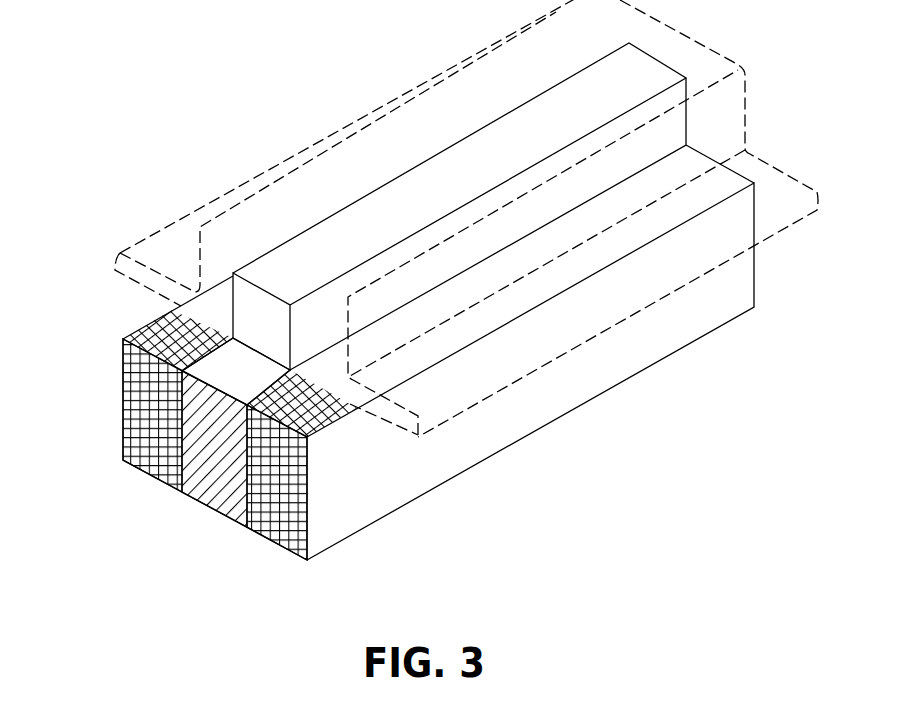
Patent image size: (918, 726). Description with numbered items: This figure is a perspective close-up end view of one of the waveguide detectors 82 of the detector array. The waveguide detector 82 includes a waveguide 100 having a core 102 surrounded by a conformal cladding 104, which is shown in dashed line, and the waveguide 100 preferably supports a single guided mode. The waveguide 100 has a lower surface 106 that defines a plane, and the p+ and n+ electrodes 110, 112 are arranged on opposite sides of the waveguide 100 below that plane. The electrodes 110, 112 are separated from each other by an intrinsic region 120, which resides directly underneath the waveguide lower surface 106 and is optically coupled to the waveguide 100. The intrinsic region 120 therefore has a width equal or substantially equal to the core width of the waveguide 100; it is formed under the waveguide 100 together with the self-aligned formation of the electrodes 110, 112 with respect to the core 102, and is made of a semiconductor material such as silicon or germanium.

The waveguide detector 82 is at (305, 64).
The waveguide 100 is at (125, 358).
The core 102 is at (233, 307).
The cladding 104 is at (772, 163).
The lower surface 106 is at (252, 358).
The p+ electrode 110 is at (278, 543).
The n+ electrode 112 is at (155, 474).
The intrinsic region 120 is at (218, 509).